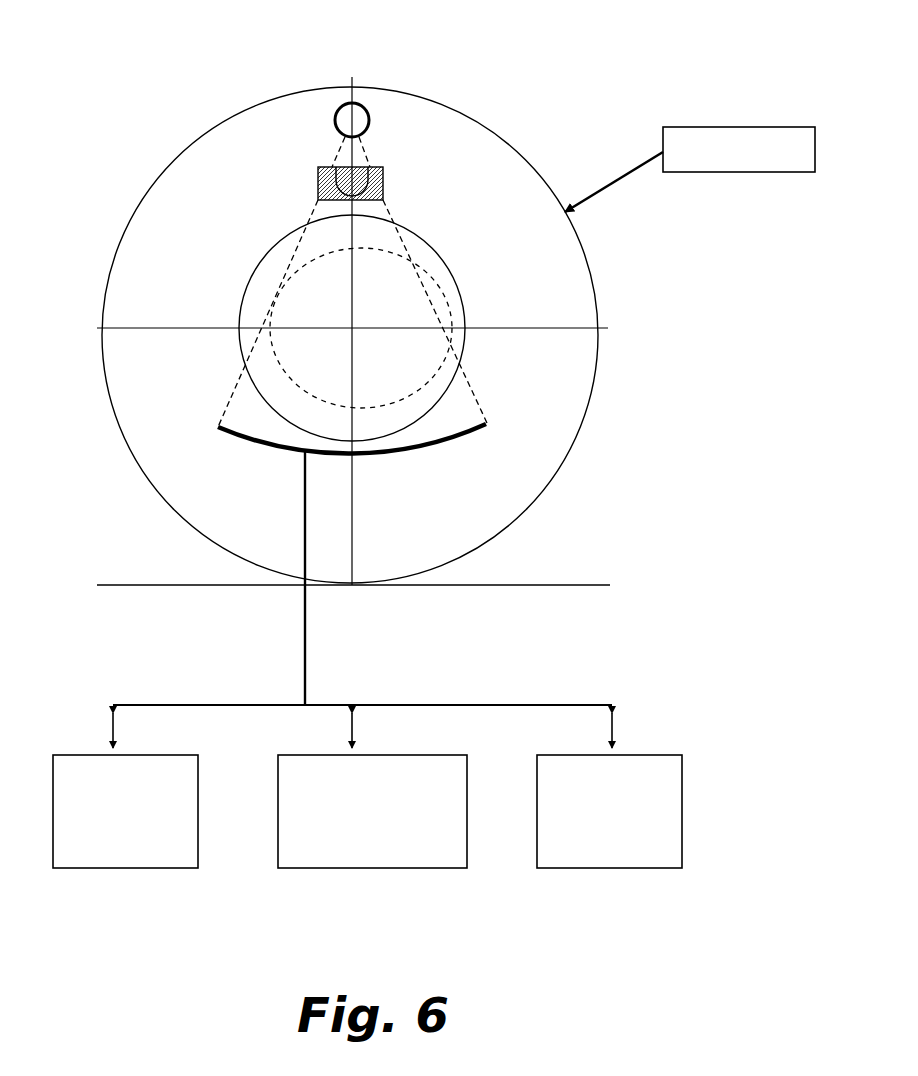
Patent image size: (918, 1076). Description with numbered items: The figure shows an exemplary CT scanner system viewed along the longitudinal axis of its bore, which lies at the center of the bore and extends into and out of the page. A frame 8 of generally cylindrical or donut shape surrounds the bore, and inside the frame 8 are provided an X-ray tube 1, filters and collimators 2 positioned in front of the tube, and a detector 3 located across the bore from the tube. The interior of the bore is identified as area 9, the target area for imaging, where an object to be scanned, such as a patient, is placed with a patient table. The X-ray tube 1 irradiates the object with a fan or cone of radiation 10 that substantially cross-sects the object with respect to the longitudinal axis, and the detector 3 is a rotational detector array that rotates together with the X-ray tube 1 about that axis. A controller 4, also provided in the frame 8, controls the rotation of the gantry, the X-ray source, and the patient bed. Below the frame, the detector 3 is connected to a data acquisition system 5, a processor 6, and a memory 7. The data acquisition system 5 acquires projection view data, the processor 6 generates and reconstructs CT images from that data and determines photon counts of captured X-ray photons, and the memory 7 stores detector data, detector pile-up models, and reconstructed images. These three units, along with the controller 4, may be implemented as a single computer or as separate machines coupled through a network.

The X-ray tube 1 is at (363, 108).
The filters and collimators 2 is at (385, 173).
The detector 3 is at (487, 427).
The controller 4 is at (773, 172).
The data acquisition system 5 is at (128, 868).
The processor 6 is at (400, 868).
The memory 7 is at (637, 868).
The frame 8 is at (131, 221).
The area 9 is at (277, 361).
The fan or cone of radiation 10 is at (229, 399).